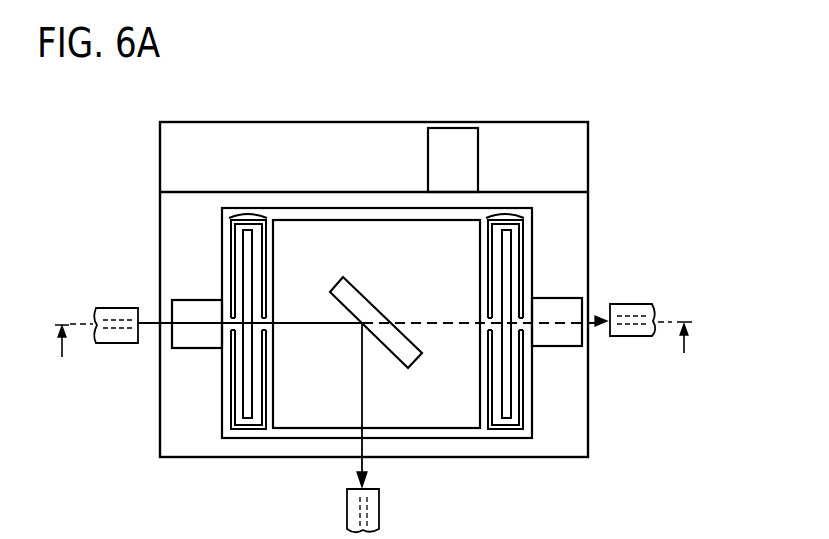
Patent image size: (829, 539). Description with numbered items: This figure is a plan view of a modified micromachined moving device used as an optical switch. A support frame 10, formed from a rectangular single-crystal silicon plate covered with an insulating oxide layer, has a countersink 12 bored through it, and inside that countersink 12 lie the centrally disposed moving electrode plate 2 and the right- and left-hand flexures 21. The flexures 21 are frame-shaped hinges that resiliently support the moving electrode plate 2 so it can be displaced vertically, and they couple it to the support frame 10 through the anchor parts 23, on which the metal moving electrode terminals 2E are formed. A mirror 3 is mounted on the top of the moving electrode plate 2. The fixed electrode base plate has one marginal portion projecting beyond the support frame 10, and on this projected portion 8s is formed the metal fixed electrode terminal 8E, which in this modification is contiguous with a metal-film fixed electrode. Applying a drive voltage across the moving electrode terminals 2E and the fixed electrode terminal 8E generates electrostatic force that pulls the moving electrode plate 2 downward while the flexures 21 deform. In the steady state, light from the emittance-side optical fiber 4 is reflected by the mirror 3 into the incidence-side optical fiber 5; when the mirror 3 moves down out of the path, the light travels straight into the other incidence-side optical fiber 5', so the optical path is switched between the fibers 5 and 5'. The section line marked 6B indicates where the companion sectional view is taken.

The support frame 10 is at (570, 214).
The projected portion 8s is at (188, 138).
The fixed electrode terminal 8E is at (448, 128).
The countersink 12 is at (413, 434).
The moving electrode plate 2 is at (320, 238).
The mirror 3 is at (366, 293).
The flexures 21 is at (248, 212).
The moving electrode terminals 2E is at (197, 299).
The anchor parts 23 is at (195, 349).
The emittance-side optical fiber 4 is at (120, 308).
The incidence-side optical fiber 5 is at (387, 512).
The incidence-side optical fiber 5' is at (657, 296).
The section line 6B is at (372, 358).